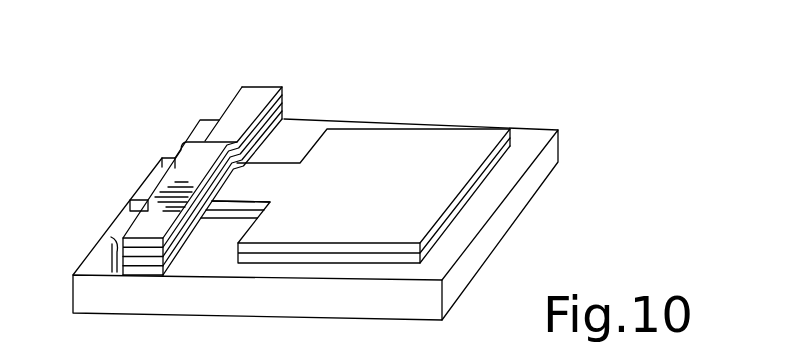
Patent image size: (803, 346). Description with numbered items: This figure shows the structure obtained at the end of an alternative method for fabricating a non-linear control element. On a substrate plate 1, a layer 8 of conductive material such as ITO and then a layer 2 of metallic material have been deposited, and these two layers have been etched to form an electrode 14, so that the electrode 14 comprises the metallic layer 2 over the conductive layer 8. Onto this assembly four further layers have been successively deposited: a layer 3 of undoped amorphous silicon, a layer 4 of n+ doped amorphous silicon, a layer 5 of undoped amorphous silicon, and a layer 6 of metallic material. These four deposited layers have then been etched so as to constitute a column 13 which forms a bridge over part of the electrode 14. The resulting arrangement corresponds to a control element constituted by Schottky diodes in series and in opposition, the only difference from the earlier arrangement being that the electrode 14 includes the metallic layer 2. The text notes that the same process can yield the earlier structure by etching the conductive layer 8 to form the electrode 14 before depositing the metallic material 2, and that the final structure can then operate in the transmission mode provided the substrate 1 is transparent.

The substrate plate 1 is at (492, 246).
The layer of metallic material 2 is at (510, 133).
The layer of undoped amorphous silicon 3 is at (284, 119).
The layer of n+ doped amorphous silicon 4 is at (278, 112).
The layer of undoped amorphous silicon 5 is at (281, 104).
The layer of metallic material 6 is at (252, 94).
The layer of conductive material 8 is at (487, 179).
The column 13 is at (112, 257).
The electrode 14 is at (436, 151).